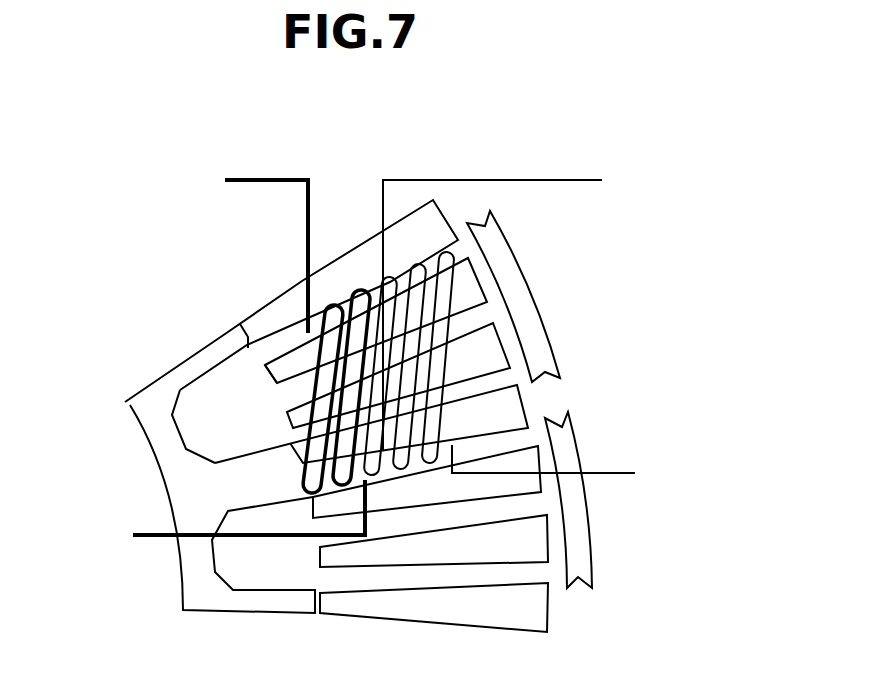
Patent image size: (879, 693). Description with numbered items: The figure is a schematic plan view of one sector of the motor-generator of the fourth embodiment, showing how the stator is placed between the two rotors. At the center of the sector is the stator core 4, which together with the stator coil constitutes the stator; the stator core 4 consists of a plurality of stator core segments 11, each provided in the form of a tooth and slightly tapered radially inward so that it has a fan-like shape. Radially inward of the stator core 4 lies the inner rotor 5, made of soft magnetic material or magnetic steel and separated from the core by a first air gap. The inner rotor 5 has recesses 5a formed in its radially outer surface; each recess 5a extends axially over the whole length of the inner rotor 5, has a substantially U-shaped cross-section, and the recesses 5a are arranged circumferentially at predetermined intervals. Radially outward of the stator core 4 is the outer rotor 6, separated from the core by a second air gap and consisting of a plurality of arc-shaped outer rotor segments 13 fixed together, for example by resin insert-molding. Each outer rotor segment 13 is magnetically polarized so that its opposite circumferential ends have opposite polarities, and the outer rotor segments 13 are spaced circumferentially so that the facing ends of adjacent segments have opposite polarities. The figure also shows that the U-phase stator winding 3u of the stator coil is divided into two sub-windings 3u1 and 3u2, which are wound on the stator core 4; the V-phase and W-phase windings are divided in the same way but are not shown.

The U-phase stator winding 3u is at (384, 306).
The sub-winding 3u1 is at (294, 178).
The sub-winding 3u2 is at (499, 299).
The stator core 4 is at (436, 600).
The inner rotor 5 is at (128, 402).
The recess 5a is at (207, 415).
The outer rotor 6 is at (637, 335).
The stator core segment 11 is at (288, 370).
The outer rotor segment 13 is at (553, 338).